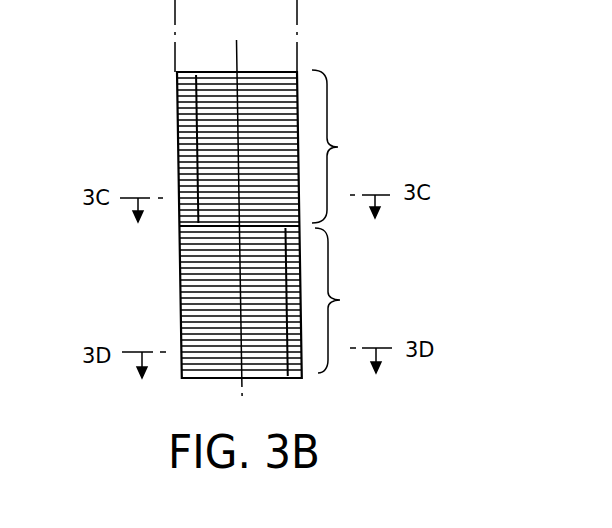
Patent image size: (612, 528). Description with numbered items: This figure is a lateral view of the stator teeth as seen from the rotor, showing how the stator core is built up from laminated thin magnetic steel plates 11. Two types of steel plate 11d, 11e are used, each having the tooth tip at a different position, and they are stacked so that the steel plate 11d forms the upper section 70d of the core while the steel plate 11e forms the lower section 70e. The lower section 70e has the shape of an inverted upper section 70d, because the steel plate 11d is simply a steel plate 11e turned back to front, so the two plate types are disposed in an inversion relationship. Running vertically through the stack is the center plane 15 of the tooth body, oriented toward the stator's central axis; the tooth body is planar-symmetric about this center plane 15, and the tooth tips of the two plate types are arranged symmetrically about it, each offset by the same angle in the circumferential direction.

The thin magnetic steel plates 11 is at (178, 81).
The steel plate of the upper section 11d is at (178, 120).
The steel plate of the lower section 11e is at (193, 294).
The center plane 15 is at (237, 58).
The upper section 70d is at (357, 146).
The lower section 70e is at (362, 300).